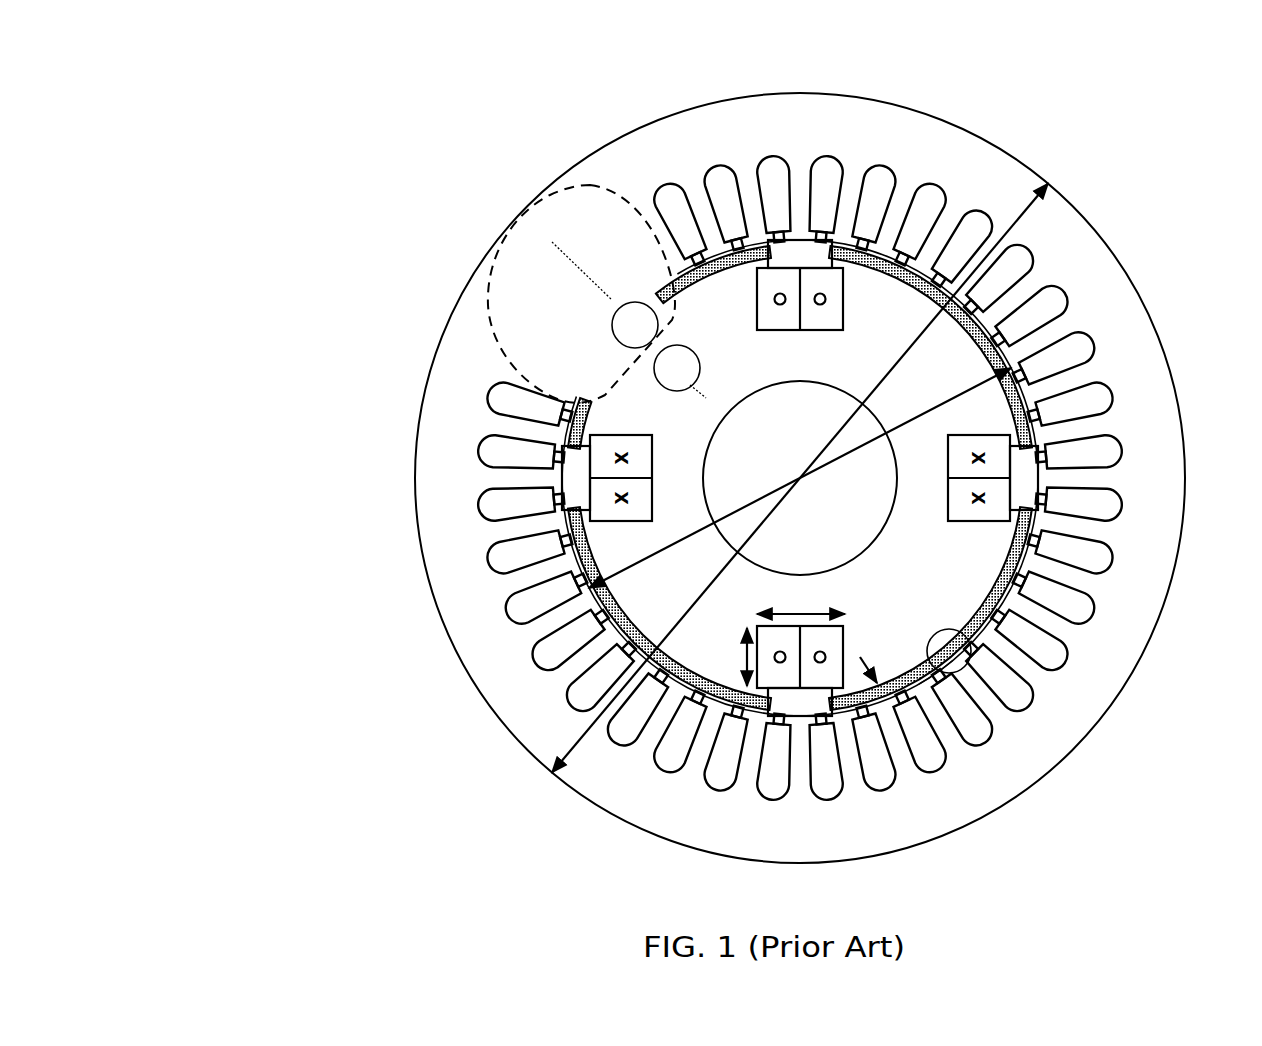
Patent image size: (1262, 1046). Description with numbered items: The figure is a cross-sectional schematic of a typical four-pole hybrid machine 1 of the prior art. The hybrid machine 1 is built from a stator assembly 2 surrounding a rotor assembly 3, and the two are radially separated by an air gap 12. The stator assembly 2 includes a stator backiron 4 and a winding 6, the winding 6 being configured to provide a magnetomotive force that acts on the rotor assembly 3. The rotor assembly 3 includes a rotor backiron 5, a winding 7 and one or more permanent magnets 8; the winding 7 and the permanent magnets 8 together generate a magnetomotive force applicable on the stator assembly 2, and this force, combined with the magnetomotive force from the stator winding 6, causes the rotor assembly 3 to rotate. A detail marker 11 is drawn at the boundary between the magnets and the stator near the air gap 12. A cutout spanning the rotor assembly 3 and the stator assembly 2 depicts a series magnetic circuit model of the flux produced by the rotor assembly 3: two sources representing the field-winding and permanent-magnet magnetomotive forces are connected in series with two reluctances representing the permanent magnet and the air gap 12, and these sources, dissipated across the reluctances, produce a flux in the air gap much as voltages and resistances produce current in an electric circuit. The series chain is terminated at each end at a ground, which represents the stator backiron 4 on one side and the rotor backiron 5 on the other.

The hybrid machine 1 is at (338, 104).
The stator assembly 2 is at (1017, 132).
The rotor assembly 3 is at (738, 420).
The stator backiron 4 is at (1095, 260).
The rotor backiron 5 is at (750, 317).
The winding 6 is at (1113, 571).
The winding 7 is at (818, 266).
The permanent magnets 8 is at (680, 262).
The air gap 11 is at (972, 643).
The air gap 12 is at (968, 664).